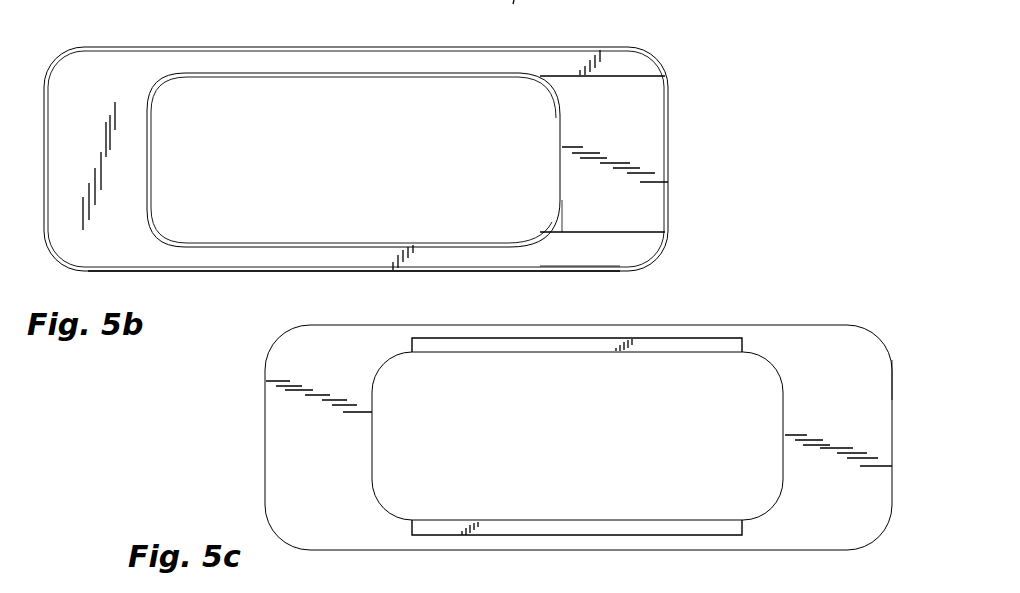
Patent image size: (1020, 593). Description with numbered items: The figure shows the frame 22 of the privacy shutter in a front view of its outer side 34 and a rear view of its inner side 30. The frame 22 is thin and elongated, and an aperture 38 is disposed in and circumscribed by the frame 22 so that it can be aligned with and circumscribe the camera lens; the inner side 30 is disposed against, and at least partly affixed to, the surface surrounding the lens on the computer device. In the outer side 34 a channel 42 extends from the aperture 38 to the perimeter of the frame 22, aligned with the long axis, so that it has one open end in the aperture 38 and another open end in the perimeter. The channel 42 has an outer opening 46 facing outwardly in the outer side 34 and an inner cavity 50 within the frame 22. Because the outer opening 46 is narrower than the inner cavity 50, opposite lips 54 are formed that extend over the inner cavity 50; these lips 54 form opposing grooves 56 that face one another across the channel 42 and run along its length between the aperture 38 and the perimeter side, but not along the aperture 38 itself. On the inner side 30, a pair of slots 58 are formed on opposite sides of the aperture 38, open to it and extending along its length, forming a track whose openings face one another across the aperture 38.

In FIG. 5B, the frame 22 is at (93, 85).
In FIG. 5C, the frame 22 is at (287, 452).
In FIG. 5C, the inner side 30 is at (853, 365).
In FIG. 5B, the outer side 34 is at (623, 65).
In FIG. 5B, the aperture 38 is at (263, 75).
In FIG. 5C, the aperture 38 is at (772, 377).
In FIG. 5B, the channel 42 is at (645, 118).
In FIG. 5B, the outer opening 46 is at (620, 232).
In FIG. 5B, the inner cavity 50 is at (640, 198).
In FIG. 5B, the lips 54 is at (640, 82).
In FIG. 5B, the grooves 56 is at (524, 15).
In FIG. 5C, the slots 58 is at (497, 350).